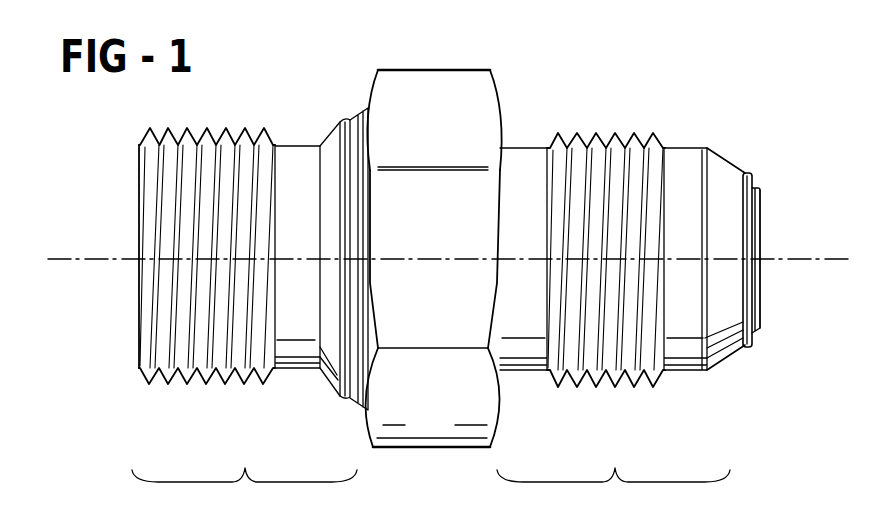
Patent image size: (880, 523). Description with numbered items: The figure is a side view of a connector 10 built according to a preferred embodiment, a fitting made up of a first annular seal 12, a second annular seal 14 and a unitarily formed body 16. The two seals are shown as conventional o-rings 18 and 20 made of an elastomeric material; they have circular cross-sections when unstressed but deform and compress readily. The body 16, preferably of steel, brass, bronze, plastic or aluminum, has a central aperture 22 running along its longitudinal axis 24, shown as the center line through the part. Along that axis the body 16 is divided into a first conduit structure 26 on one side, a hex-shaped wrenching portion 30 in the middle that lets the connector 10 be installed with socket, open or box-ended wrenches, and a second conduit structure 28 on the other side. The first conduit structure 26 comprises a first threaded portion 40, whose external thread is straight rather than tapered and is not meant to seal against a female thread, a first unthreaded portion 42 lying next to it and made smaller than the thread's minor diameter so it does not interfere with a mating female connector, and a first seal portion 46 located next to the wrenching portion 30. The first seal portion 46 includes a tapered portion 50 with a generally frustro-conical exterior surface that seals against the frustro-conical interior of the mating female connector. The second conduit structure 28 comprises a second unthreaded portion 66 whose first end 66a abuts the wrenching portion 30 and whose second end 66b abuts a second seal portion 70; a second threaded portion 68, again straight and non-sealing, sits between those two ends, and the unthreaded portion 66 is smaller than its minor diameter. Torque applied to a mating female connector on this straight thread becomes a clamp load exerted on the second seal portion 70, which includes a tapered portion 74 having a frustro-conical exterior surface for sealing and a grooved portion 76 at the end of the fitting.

The connector 10 is at (789, 334).
The first annular seal 12 is at (349, 112).
The second annular seal 14 is at (755, 166).
The body 16 is at (514, 92).
The o-ring 18 is at (338, 123).
The o-ring 20 is at (748, 348).
The central aperture 22 is at (110, 187).
The longitudinal axis 24 is at (793, 258).
The first conduit structure 26 is at (244, 490).
The second conduit structure 28 is at (613, 490).
The wrenching portion 30 is at (473, 88).
The first threaded portion 40 is at (157, 385).
The first unthreaded portion 42 is at (290, 382).
The first seal portion 46 is at (342, 407).
The tapered portion 50 is at (356, 107).
The second unthreaded portion 66 is at (522, 379).
The first end 66a is at (522, 158).
The second end 66b is at (687, 157).
The second threaded portion 68 is at (605, 386).
The second seal portion 70 is at (727, 379).
The tapered portion 74 is at (718, 221).
The grooved portion 76 is at (758, 181).